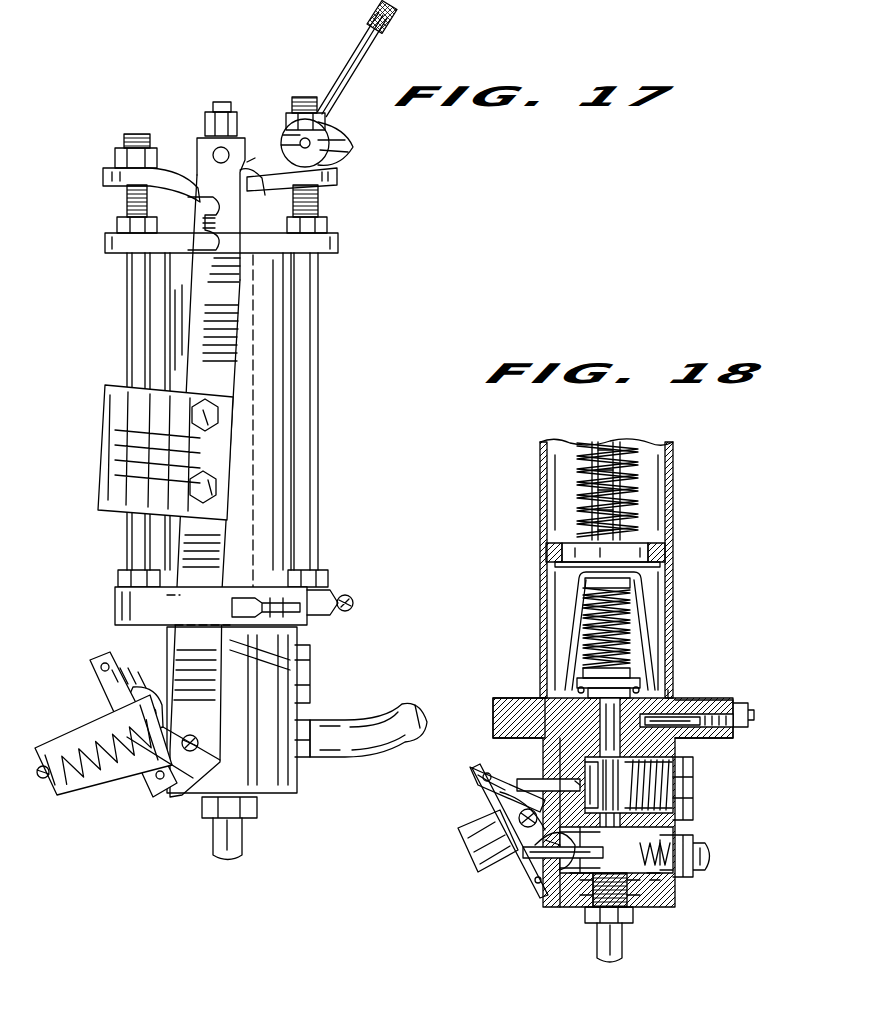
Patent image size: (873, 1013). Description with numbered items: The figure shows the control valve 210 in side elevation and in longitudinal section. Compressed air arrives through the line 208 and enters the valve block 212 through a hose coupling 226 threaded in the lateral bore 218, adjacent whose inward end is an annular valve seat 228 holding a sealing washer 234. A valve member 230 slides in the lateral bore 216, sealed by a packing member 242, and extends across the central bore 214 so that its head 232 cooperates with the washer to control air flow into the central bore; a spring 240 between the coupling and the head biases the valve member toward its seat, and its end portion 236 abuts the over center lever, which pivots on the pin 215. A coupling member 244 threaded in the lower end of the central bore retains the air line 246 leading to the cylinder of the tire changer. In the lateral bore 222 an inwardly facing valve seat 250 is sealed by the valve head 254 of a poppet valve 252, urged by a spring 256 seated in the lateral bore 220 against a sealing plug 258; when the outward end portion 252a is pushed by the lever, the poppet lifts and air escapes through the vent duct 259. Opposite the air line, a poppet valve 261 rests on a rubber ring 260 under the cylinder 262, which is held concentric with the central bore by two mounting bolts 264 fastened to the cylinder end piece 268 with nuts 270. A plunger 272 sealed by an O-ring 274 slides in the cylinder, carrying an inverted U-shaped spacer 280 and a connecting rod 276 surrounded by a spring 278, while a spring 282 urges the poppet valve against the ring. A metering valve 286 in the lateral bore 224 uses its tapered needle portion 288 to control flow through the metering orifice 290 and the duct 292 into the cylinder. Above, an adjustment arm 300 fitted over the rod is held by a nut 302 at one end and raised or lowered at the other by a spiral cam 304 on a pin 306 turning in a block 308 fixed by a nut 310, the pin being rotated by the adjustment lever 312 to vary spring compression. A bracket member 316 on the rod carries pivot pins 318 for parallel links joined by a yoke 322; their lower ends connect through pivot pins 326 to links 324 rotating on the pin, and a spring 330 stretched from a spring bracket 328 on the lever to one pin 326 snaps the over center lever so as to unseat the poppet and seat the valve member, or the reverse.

In FIG. 17, the line 208 is at (380, 758).
In FIG. 18, the line 208 is at (712, 858).
In FIG. 17, the control valve 210 is at (118, 547).
In FIG. 18, the control valve 210 is at (540, 636).
In FIG. 17, the valve block 212 is at (185, 800).
In FIG. 18, the valve block 212 is at (540, 735).
In FIG. 18, the central bore 214 is at (592, 920).
In FIG. 17, the pin 215 is at (165, 720).
In FIG. 18, the pin 215 is at (466, 840).
In FIG. 18, the lateral bore 216 is at (535, 905).
In FIG. 18, the lateral bore 218 is at (670, 905).
In FIG. 18, the lateral bore 220 is at (695, 782).
In FIG. 18, the lateral bore 222 is at (575, 790).
In FIG. 18, the lateral bore 224 is at (700, 700).
In FIG. 18, the hose coupling 226 is at (690, 878).
In FIG. 18, the annular valve seat 228 is at (630, 900).
In FIG. 18, the valve member 230 is at (490, 860).
In FIG. 18, the head 232 is at (690, 870).
In FIG. 18, the sealing washer 234 is at (678, 835).
In FIG. 18, the end portion 236 is at (532, 880).
In FIG. 18, the spring 240 is at (678, 893).
In FIG. 18, the packing member 242 is at (575, 905).
In FIG. 17, the coupling member 244 is at (255, 816).
In FIG. 18, the coupling member 244 is at (600, 948).
In FIG. 17, the air line 246 is at (210, 850).
In FIG. 18, the air line 246 is at (630, 960).
In FIG. 18, the valve seat 250 is at (615, 770).
In FIG. 18, the poppet valve 252 is at (482, 766).
In FIG. 18, the outward end portion 252a is at (497, 789).
In FIG. 18, the valve head 254 is at (600, 770).
In FIG. 18, the spring 256 is at (606, 756).
In FIG. 18, the sealing plug 258 is at (690, 800).
In FIG. 18, the vent duct 259 is at (516, 812).
In FIG. 18, the rubber ring 260 is at (582, 694).
In FIG. 18, the poppet valve 261 is at (566, 682).
In FIG. 17, the cylinder 262 is at (273, 482).
In FIG. 18, the cylinder 262 is at (543, 583).
In FIG. 17, the mounting bolts 264 is at (307, 366).
In FIG. 17, the cylinder end piece 268 is at (340, 248).
In FIG. 17, the nuts 270 is at (120, 225).
In FIG. 18, the plunger 272 is at (640, 548).
In FIG. 18, the O-ring 274 is at (548, 545).
In FIG. 17, the connecting rod 276 is at (225, 102).
In FIG. 18, the connecting rod 276 is at (612, 445).
In FIG. 17, the spring 278 is at (200, 222).
In FIG. 18, the spring 278 is at (648, 482).
In FIG. 18, the spacer 280 is at (650, 612).
In FIG. 18, the spring 282 is at (630, 645).
In FIG. 17, the metering valve 286 is at (340, 598).
In FIG. 18, the metering valve 286 is at (756, 712).
In FIG. 18, the tapered needle portion 288 is at (655, 726).
In FIG. 18, the metering orifice 290 is at (678, 752).
In FIG. 18, the duct 292 is at (668, 697).
In FIG. 17, the adjustment arm 300 is at (170, 168).
In FIG. 17, the nut 302 is at (118, 160).
In FIG. 17, the spiral cam 304 is at (352, 148).
In FIG. 17, the pin 306 is at (311, 148).
In FIG. 17, the block 308 is at (332, 135).
In FIG. 17, the nut 310 is at (288, 121).
In FIG. 17, the adjustment lever 312 is at (360, 46).
In FIG. 17, the bracket member 316 is at (272, 182).
In FIG. 17, the pivot pins 318 is at (198, 148).
In FIG. 17, the yoke 322 is at (115, 452).
In FIG. 17, the links 324 is at (133, 695).
In FIG. 17, the pivot pins 326 is at (198, 770).
In FIG. 17, the spring bracket 328 is at (82, 728).
In FIG. 17, the spring 330 is at (105, 790).